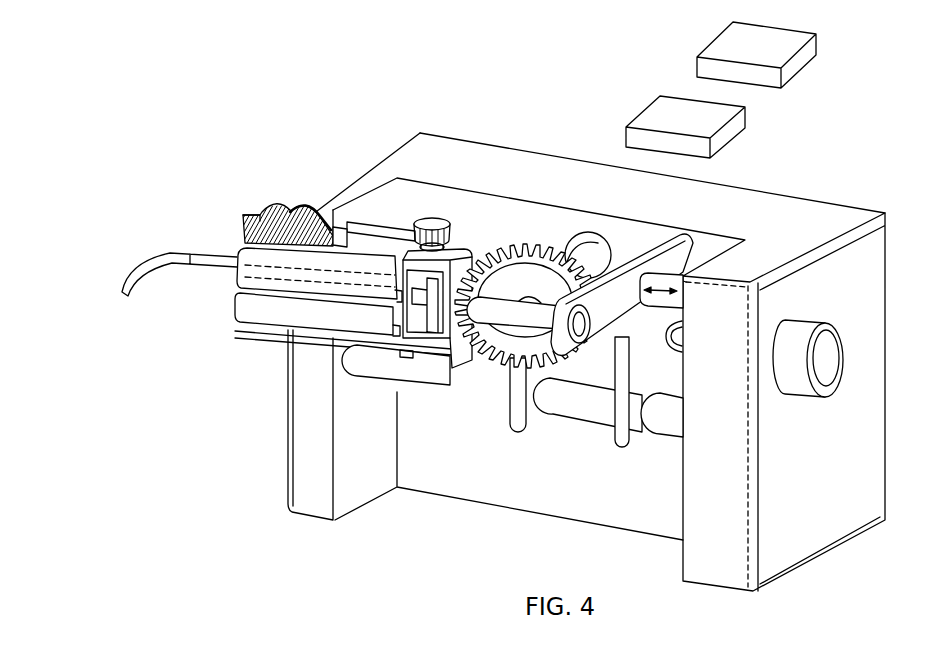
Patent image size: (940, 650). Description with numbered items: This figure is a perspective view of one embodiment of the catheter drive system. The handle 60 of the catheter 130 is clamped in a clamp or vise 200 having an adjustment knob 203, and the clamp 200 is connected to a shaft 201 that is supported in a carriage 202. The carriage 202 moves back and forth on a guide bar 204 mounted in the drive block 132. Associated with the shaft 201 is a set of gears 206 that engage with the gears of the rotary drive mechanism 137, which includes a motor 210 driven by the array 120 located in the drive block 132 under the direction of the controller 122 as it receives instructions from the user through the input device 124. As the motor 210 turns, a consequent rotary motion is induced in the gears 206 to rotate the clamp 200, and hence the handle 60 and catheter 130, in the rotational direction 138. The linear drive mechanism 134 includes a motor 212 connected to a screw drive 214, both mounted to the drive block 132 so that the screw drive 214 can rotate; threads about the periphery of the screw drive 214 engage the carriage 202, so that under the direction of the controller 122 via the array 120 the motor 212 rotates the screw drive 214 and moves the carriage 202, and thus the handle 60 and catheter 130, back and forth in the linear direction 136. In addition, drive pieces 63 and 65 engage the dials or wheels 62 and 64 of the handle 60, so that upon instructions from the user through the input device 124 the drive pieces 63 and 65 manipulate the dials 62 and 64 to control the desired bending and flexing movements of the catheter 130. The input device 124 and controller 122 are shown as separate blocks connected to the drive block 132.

The input device 124 is at (761, 54).
The controller 122 is at (742, 65).
The array 120 is at (656, 200).
The drive block 132 is at (668, 136).
The drive piece 63 is at (273, 201).
The drive piece 65 is at (304, 204).
The dial 64 is at (333, 238).
The screw drive 214 is at (370, 231).
The clamp 200 is at (397, 248).
The adjustment knob 203 is at (442, 218).
The rotary drive mechanism 137 is at (527, 280).
The motor 210 is at (595, 258).
The dial 62 is at (245, 240).
The catheter 130 is at (163, 265).
The handle 60 is at (257, 277).
The rotational direction 138 is at (455, 372).
The set of gears 206 is at (482, 360).
The shaft 201 is at (541, 328).
The guide bar 204 is at (590, 408).
The carriage 202 is at (638, 437).
The linear direction 136 is at (664, 306).
The linear drive mechanism 134 is at (787, 345).
The motor 212 is at (819, 317).